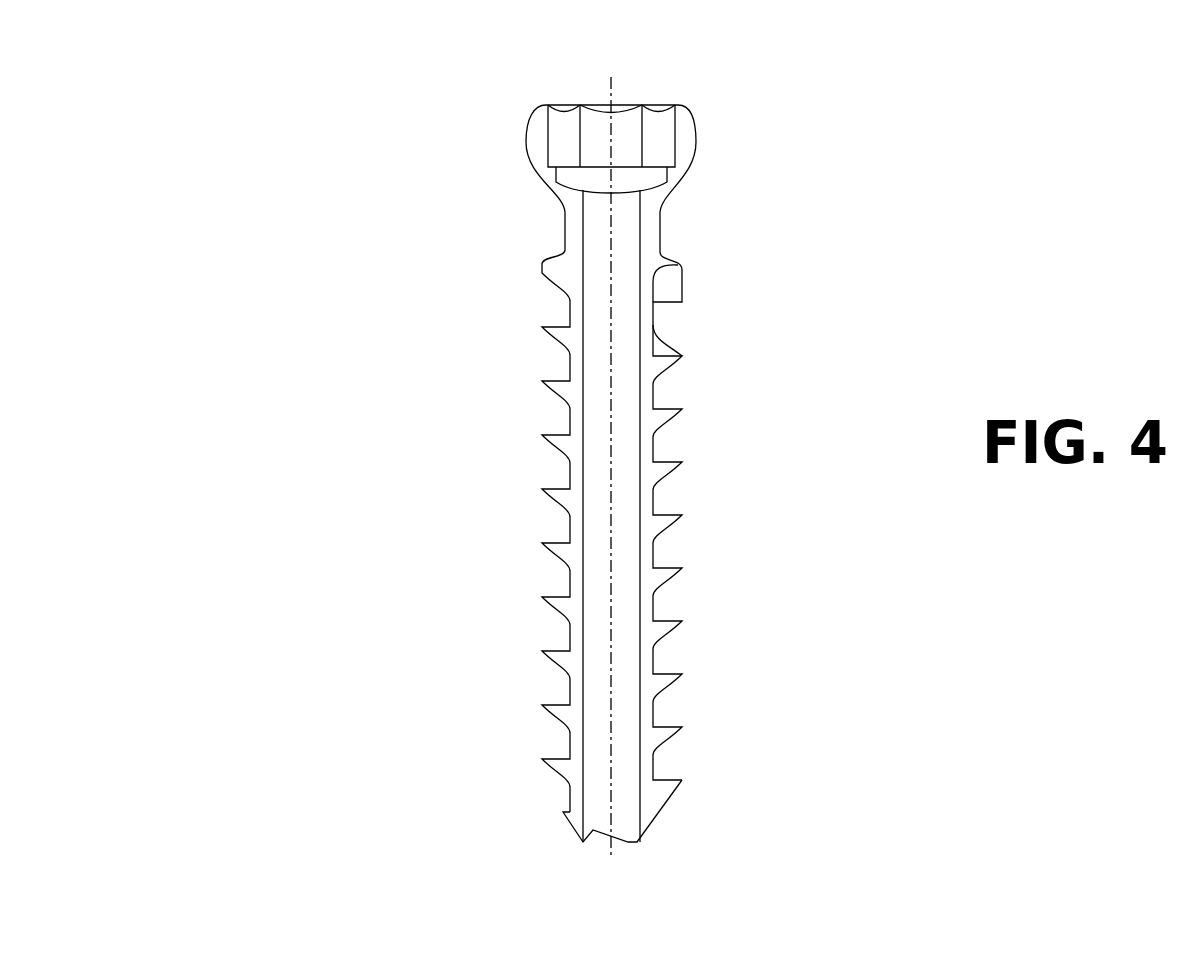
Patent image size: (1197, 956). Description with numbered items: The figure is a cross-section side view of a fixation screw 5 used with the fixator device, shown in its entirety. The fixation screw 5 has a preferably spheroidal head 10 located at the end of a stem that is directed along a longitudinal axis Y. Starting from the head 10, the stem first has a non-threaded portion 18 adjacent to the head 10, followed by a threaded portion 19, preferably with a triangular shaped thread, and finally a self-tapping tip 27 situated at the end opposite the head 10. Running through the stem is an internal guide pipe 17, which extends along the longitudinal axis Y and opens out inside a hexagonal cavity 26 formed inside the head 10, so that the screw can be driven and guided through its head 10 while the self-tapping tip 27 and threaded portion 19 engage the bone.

The fixation screw 5 is at (396, 175).
The spheroidal head 10 is at (697, 141).
The hexagonal cavity 26 is at (633, 135).
The non-threaded portion 18 is at (670, 226).
The internal guide pipe 17 is at (605, 424).
The threaded portion 19 is at (529, 703).
The self-tapping tip 27 is at (654, 831).
The longitudinal axis Y is at (609, 88).